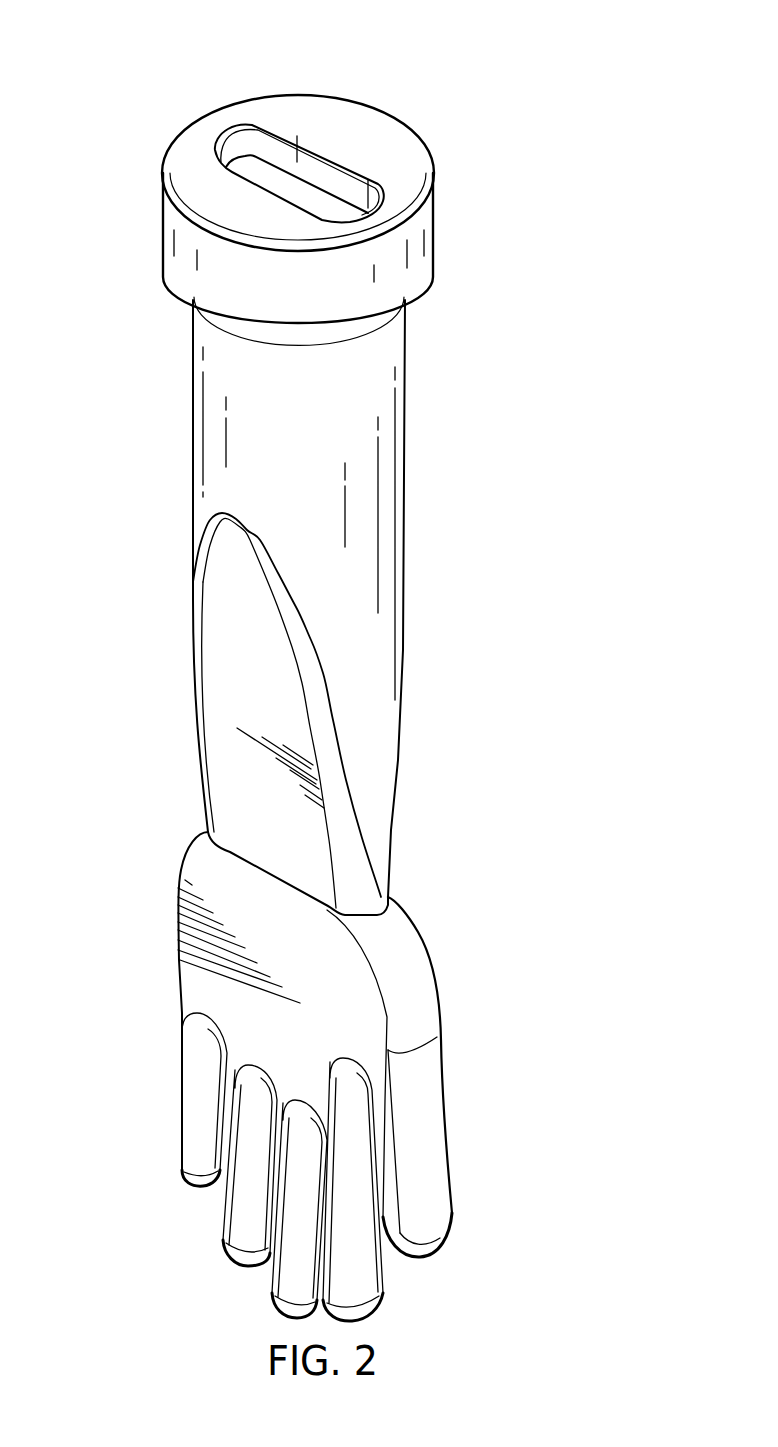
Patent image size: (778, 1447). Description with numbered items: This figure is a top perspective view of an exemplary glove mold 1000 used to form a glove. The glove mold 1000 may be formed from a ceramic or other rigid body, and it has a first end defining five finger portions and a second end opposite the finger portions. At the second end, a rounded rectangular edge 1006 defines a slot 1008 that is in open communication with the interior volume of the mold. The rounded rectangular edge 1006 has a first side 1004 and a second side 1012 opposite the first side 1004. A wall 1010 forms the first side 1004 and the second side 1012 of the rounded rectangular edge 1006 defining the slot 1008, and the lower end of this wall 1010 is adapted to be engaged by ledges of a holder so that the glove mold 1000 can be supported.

The glove mold 1000 is at (259, 660).
The first side 1004 is at (355, 180).
The rounded rectangular edge 1006 is at (333, 151).
The slot 1008 is at (270, 150).
The wall 1010 is at (312, 161).
The second side 1012 is at (230, 127).